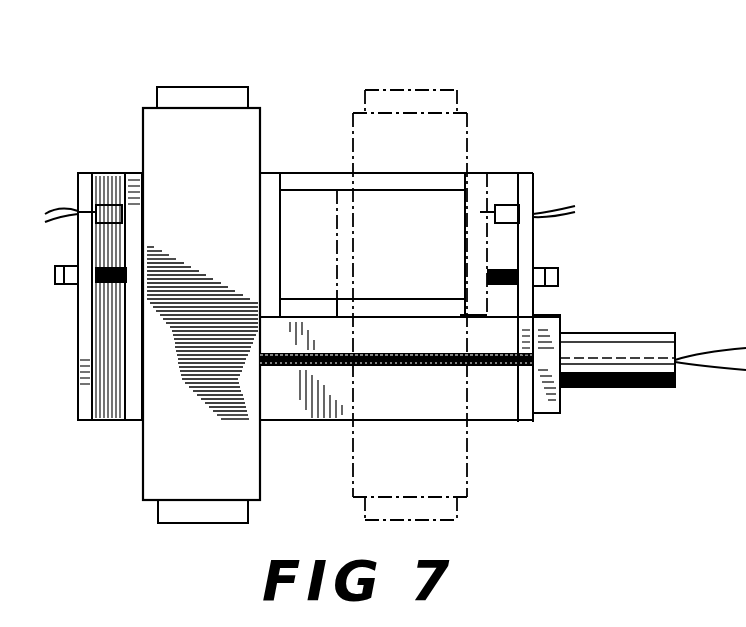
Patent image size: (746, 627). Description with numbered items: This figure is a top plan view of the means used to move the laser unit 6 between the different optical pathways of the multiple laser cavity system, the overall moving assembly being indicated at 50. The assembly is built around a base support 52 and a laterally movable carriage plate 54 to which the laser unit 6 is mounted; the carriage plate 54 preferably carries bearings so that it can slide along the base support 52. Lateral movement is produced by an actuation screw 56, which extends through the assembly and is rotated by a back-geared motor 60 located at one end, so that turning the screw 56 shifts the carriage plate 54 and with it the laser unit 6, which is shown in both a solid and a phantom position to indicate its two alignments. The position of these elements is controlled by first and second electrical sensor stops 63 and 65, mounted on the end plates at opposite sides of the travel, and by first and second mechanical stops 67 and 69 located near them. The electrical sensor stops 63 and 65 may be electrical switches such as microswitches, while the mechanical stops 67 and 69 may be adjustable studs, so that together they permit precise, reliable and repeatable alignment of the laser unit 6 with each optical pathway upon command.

The roller drive assembly 50 is at (122, 90).
The laser unit 6 is at (207, 88).
The base support 52 is at (480, 407).
The carriage plate 54 is at (275, 212).
The actuation screw 56 is at (375, 367).
The back-geared motor 60 is at (600, 333).
The first electrical sensor stop 63 is at (110, 200).
The second electrical sensor stop 65 is at (503, 200).
The first mechanical stop 67 is at (112, 275).
The second mechanical stop 69 is at (503, 272).